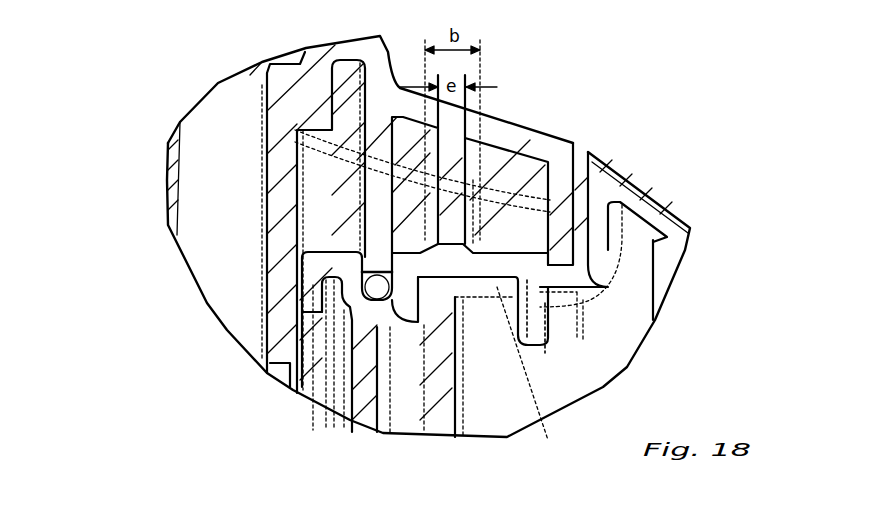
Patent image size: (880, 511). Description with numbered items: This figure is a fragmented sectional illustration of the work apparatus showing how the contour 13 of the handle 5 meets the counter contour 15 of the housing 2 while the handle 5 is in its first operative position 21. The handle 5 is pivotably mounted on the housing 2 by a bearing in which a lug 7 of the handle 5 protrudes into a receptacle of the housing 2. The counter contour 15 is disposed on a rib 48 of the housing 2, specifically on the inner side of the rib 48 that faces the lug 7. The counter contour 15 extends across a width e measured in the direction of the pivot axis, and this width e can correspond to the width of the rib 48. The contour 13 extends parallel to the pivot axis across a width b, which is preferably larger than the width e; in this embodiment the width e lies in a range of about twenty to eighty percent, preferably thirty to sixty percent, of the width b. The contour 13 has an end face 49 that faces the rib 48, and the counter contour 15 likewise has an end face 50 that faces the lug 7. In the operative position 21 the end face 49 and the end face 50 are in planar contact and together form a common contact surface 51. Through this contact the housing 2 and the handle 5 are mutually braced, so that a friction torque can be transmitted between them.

The operative position 21 is at (108, 128).
The housing 2 is at (510, 126).
The rib 48 is at (397, 247).
The counter contour 15 is at (467, 233).
The end face 49 is at (350, 252).
The end face 50 is at (360, 275).
The contact surface 51 is at (330, 300).
The handle 5 is at (365, 423).
The lug 7 is at (440, 290).
The contour 13 is at (533, 373).